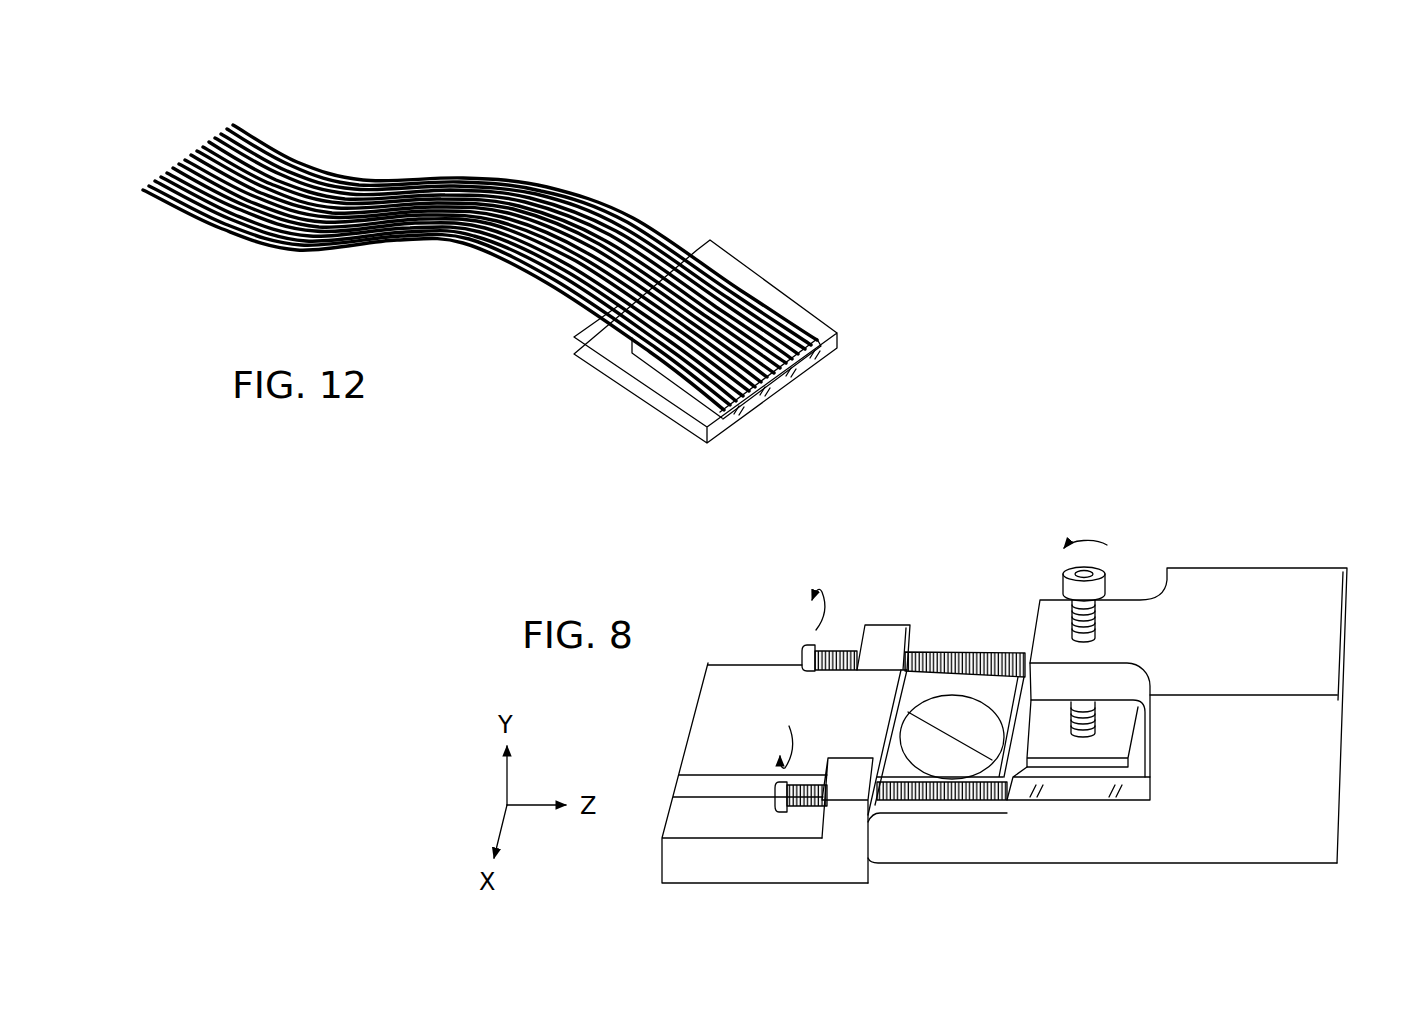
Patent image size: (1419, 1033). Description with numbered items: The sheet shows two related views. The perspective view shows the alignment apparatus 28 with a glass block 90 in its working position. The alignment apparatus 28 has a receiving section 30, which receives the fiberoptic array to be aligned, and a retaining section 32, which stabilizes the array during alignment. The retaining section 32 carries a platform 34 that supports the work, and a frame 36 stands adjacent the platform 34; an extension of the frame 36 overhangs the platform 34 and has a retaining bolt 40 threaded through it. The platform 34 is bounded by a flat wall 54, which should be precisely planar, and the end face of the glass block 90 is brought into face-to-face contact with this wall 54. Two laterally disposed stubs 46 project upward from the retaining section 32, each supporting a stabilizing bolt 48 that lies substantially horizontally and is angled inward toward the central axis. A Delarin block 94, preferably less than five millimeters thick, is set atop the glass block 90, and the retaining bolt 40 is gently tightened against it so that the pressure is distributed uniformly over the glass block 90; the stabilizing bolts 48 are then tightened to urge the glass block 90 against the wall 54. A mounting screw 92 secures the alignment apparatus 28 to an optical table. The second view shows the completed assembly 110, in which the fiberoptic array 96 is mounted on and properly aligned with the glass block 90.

In FIG. 8, the alignment apparatus 28 is at (1220, 535).
In FIG. 8, the receiving section 30 is at (1258, 877).
In FIG. 8, the retaining section 32 is at (640, 890).
In FIG. 8, the platform 34 is at (1050, 800).
In FIG. 8, the frame 36 is at (1278, 583).
In FIG. 8, the retaining bolt 40 is at (1097, 620).
In FIG. 8, the stubs 46 is at (886, 625).
In FIG. 8, the stabilizing bolts 48 is at (803, 655).
In FIG. 8, the flat wall 54 is at (1150, 735).
In FIG. 12, the glass block 90 is at (827, 357).
In FIG. 8, the glass block 90 is at (1145, 770).
In FIG. 8, the mounting screw 92 is at (897, 743).
In FIG. 8, the Delarin block 94 is at (1125, 748).
In FIG. 12, the fiberoptic array 96 is at (797, 323).
In FIG. 12, the completed assembly 110 is at (700, 203).